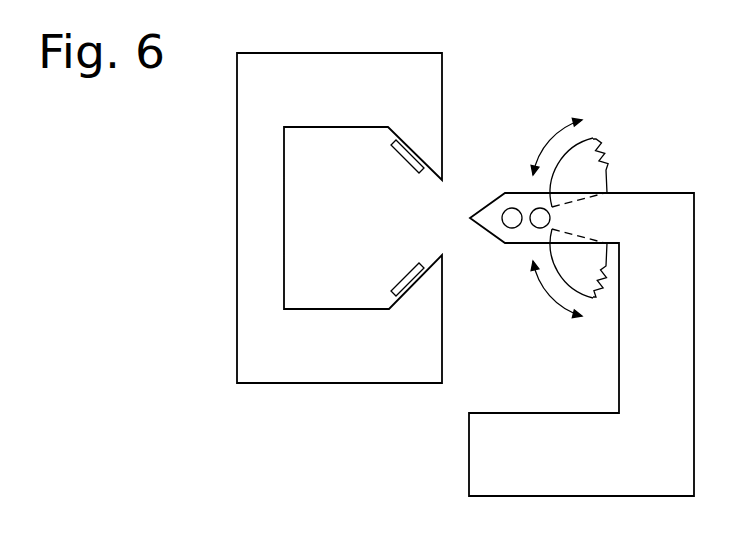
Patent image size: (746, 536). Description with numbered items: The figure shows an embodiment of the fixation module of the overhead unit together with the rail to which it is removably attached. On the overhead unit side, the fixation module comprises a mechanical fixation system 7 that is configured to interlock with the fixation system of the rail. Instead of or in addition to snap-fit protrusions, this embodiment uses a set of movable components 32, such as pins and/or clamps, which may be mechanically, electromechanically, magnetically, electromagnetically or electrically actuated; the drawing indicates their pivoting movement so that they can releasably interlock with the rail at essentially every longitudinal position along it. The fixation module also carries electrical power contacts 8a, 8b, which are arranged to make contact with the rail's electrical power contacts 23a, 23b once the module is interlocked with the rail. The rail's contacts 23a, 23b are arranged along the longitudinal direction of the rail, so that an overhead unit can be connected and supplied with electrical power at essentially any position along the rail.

The mechanical fixation system 7 is at (644, 171).
The electrical power contact 8a is at (601, 152).
The electrical power contact 8b is at (603, 288).
The electrical power contact 23a is at (414, 153).
The electrical power contact 23b is at (413, 277).
The movable components 32 is at (580, 161).